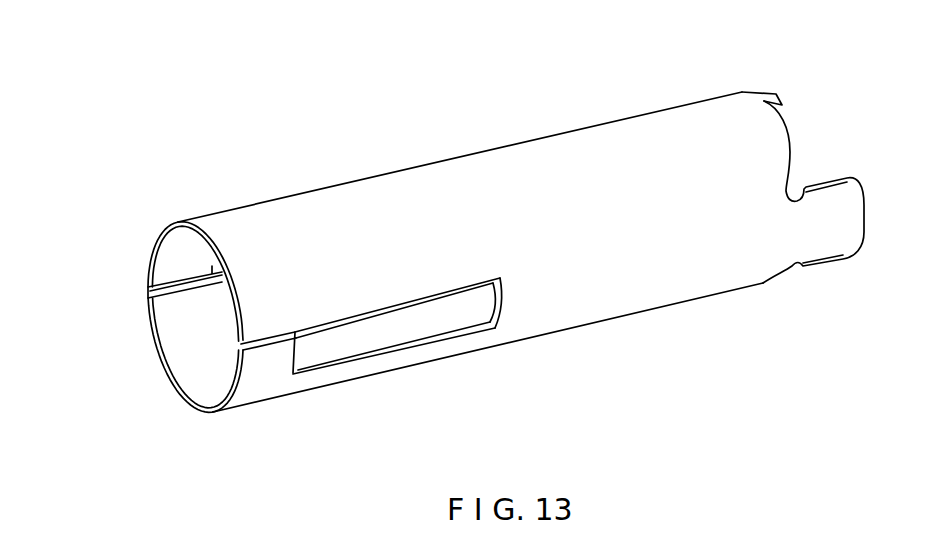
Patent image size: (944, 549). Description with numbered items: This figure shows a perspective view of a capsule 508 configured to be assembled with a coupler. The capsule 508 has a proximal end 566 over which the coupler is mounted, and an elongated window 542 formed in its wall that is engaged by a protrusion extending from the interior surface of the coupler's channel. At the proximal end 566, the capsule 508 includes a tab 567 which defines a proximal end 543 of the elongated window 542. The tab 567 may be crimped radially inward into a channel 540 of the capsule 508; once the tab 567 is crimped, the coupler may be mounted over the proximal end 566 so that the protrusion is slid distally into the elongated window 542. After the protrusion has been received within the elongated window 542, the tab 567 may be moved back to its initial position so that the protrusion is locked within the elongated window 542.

The capsule 508 is at (370, 115).
The proximal end 566 is at (227, 235).
The tab 567 is at (228, 371).
The channel 540 is at (195, 365).
The proximal end of the elongated window 543 is at (297, 352).
The elongated window 542 is at (382, 338).